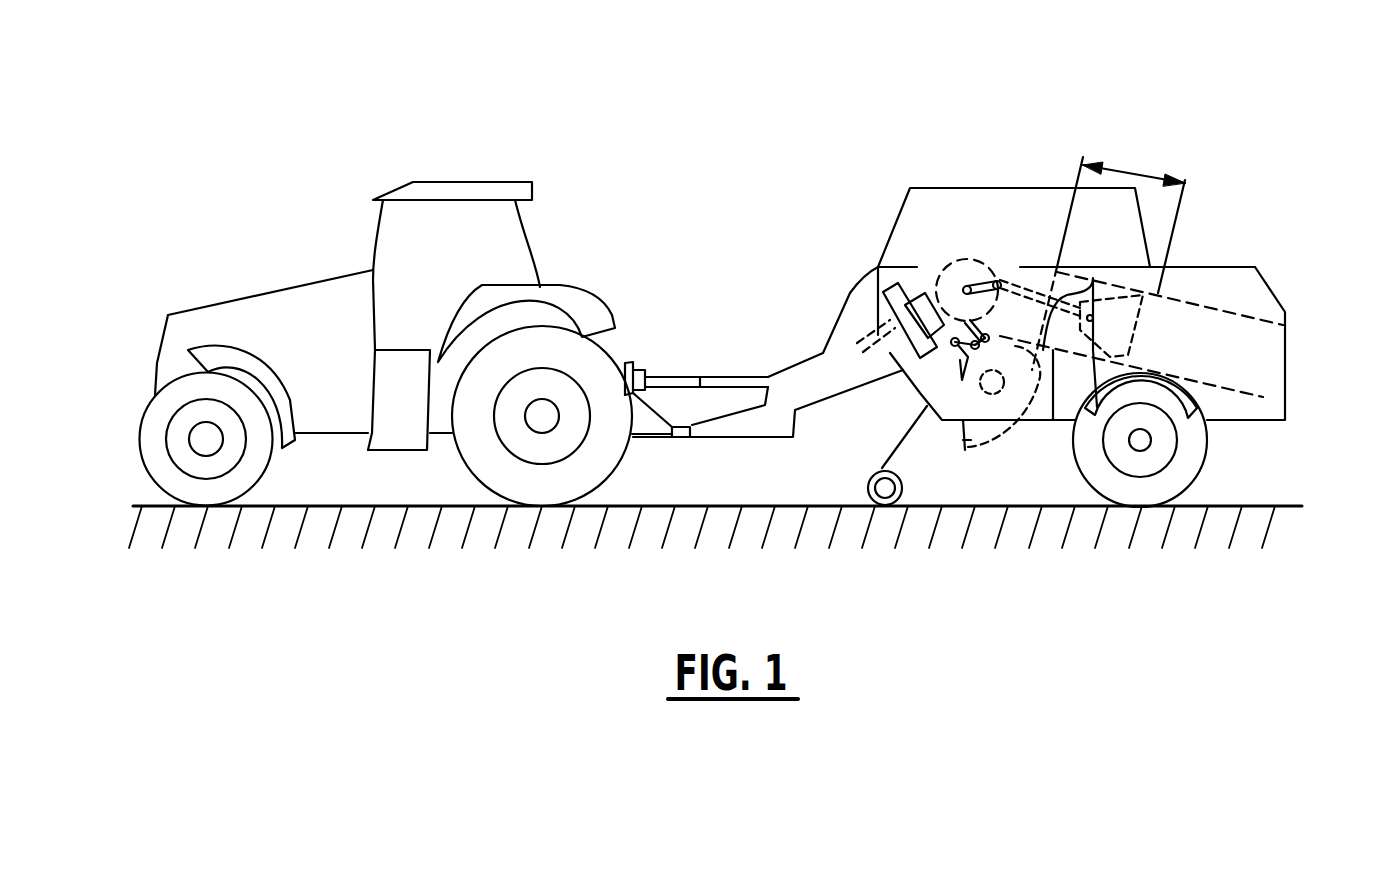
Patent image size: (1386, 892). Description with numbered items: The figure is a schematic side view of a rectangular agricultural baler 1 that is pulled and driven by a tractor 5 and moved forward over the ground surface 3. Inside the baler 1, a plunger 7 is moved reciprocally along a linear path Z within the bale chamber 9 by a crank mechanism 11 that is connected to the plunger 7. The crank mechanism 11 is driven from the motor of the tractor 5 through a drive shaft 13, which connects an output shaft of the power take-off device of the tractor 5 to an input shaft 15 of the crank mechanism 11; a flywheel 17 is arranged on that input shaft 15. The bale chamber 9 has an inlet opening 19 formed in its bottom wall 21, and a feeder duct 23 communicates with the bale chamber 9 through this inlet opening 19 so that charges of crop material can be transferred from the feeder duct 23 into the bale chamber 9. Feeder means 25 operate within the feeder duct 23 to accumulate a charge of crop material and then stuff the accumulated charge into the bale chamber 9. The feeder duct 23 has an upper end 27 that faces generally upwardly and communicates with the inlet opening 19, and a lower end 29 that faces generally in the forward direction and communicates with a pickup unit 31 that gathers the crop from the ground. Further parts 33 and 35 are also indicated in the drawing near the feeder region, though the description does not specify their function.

The rectangular agricultural baler 1 is at (1067, 150).
The ground surface 3 is at (1225, 507).
The tractor 5 is at (284, 303).
The plunger 7 is at (1120, 337).
The bale chamber 9 is at (1245, 353).
The crank mechanism 11 is at (992, 232).
The drive shaft 13 is at (717, 378).
The input shaft 15 is at (937, 278).
The flywheel 17 is at (890, 305).
The inlet opening 19 is at (1093, 278).
The bottom wall 21 is at (1190, 397).
The feeder duct 23 is at (993, 440).
The feeder means 25 is at (985, 385).
The upper end 27 is at (1030, 340).
The lower end 29 is at (968, 443).
The pickup unit 31 is at (928, 455).
The frame 33 is at (1041, 340).
The pivot 35 is at (1018, 428).
The linear path Z is at (1135, 174).